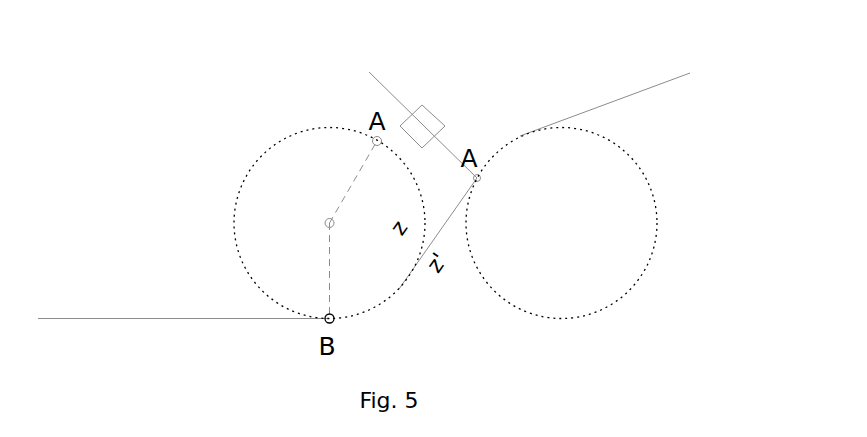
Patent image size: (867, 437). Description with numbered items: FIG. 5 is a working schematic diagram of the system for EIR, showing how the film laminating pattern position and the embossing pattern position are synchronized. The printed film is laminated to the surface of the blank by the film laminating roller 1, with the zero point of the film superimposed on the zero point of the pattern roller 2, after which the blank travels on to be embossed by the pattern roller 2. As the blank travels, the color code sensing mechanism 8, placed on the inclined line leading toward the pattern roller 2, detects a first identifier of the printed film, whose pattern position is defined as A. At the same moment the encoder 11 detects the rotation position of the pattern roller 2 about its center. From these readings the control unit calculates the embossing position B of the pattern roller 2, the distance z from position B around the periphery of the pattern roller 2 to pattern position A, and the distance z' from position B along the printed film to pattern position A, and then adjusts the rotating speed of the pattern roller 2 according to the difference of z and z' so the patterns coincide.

The film laminating roller 1 is at (592, 242).
The pattern roller 2 is at (307, 150).
The color code sensing mechanism 8 is at (432, 120).
The encoder 11 is at (325, 225).